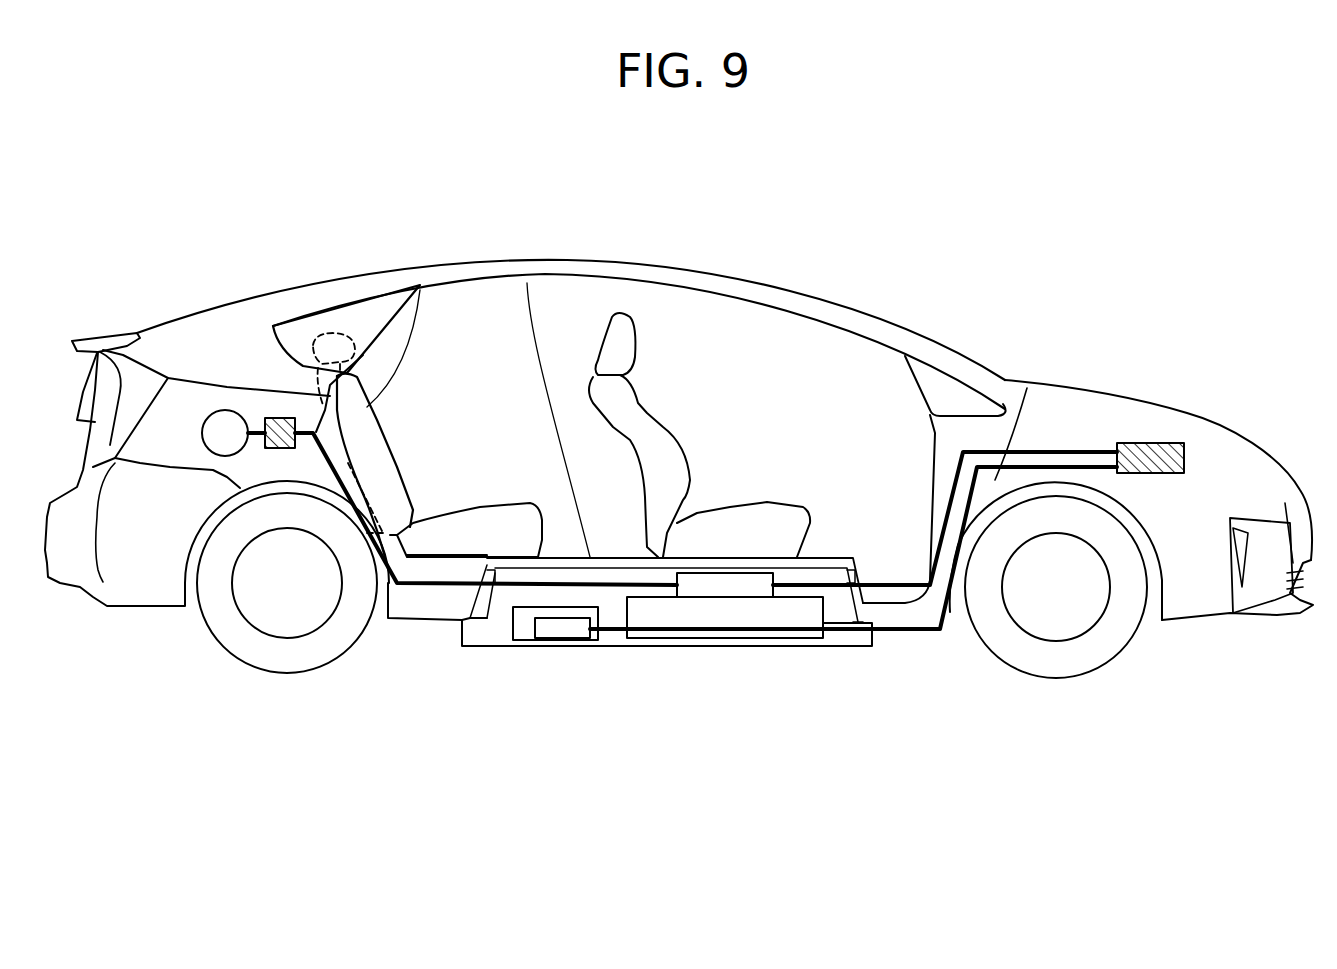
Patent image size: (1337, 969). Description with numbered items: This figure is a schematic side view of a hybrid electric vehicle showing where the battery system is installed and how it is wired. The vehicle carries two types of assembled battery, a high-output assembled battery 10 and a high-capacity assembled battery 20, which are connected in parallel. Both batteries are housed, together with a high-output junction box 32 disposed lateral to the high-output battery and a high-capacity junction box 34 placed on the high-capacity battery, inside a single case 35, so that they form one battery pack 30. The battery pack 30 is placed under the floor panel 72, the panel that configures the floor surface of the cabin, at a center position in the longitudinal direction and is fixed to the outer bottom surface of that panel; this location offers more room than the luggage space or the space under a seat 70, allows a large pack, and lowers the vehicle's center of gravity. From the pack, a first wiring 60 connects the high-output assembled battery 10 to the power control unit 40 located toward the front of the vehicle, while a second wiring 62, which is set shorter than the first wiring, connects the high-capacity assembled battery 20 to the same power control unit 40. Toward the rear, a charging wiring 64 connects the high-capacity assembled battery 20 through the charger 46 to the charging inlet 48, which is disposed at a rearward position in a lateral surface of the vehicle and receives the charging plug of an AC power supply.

The high-output assembled battery 10 is at (527, 625).
The high-capacity assembled battery 20 is at (780, 612).
The battery pack 30 is at (658, 677).
The high-output junction box 32 is at (571, 630).
The high-capacity junction box 34 is at (710, 587).
The case 35 is at (495, 645).
The power control unit (PCU) 40 is at (1150, 443).
The charger 46 is at (280, 417).
The charging inlet 48 is at (227, 410).
The first wiring 60 is at (1063, 467).
The second wiring 62 is at (1010, 447).
The charging wiring 64 is at (423, 588).
The seat 70 is at (380, 403).
The floor panel 72 is at (527, 283).